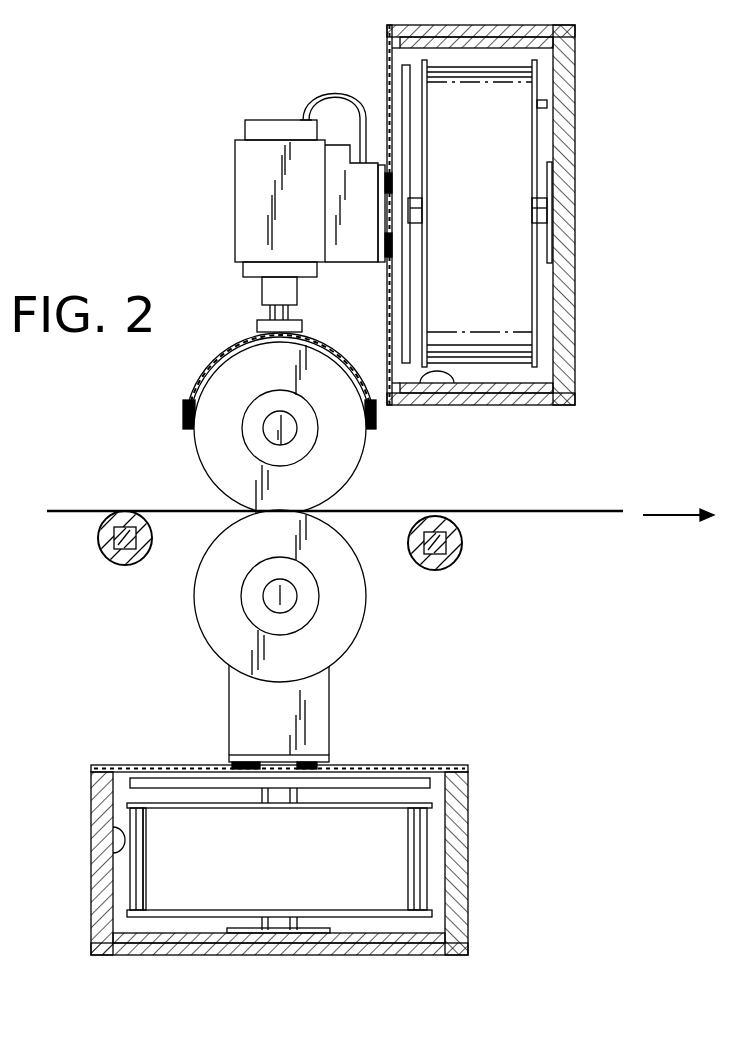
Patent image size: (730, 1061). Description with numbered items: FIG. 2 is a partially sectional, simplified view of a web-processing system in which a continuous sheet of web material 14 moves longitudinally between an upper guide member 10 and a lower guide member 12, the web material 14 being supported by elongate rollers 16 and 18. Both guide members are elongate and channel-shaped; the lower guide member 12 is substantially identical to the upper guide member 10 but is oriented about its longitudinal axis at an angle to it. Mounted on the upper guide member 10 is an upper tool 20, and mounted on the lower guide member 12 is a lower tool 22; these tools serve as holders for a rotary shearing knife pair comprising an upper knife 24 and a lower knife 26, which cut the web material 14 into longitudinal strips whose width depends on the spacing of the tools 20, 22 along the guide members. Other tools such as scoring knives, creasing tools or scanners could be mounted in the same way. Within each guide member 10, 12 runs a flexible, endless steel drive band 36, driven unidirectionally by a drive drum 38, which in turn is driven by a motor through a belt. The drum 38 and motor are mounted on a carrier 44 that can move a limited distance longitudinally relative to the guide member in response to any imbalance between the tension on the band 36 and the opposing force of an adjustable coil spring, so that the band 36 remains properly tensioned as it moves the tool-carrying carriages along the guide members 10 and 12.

The upper guide member 10 is at (586, 135).
The lower guide member 12 is at (484, 850).
The web material 14 is at (607, 512).
The roller 16 is at (125, 566).
The roller 18 is at (457, 553).
The upper tool 20 is at (237, 222).
The lower tool 22 is at (332, 688).
The rotary shearing knife 24 is at (195, 456).
The rotary shearing knife 26 is at (210, 650).
The drive band 36 is at (489, 236).
The drive drum 38 is at (538, 108).
The carrier 44 is at (424, 381).